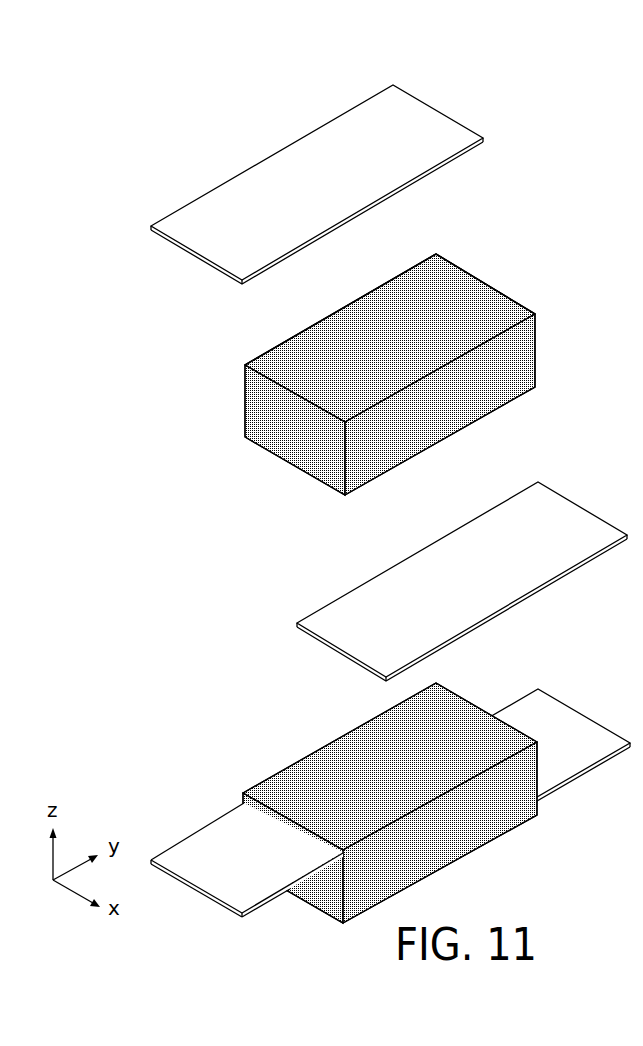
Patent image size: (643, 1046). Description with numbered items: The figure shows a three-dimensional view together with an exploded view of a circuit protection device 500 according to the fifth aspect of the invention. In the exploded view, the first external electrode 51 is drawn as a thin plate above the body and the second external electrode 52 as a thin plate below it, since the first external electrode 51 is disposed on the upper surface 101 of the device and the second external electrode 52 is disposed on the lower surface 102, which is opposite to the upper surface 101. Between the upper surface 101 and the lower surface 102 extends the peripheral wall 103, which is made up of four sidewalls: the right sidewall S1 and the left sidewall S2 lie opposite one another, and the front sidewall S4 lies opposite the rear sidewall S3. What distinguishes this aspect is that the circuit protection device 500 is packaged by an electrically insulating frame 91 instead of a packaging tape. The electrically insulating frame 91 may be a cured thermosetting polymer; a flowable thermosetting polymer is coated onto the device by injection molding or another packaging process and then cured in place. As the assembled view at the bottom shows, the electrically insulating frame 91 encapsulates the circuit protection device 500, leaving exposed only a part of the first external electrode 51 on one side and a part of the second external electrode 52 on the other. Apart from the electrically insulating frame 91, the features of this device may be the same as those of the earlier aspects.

The circuit protection device 500 is at (149, 86).
The first external electrode 51 is at (366, 112).
The second external electrode 52 is at (565, 507).
The electrically insulating frame 91 is at (351, 583).
The upper surface 101 is at (358, 327).
The lower surface 102 is at (355, 415).
The peripheral wall 103 is at (351, 395).
The right sidewall S1 is at (250, 407).
The left sidewall S2 is at (531, 308).
The rear sidewall S3 is at (432, 423).
The front sidewall S4 is at (318, 326).